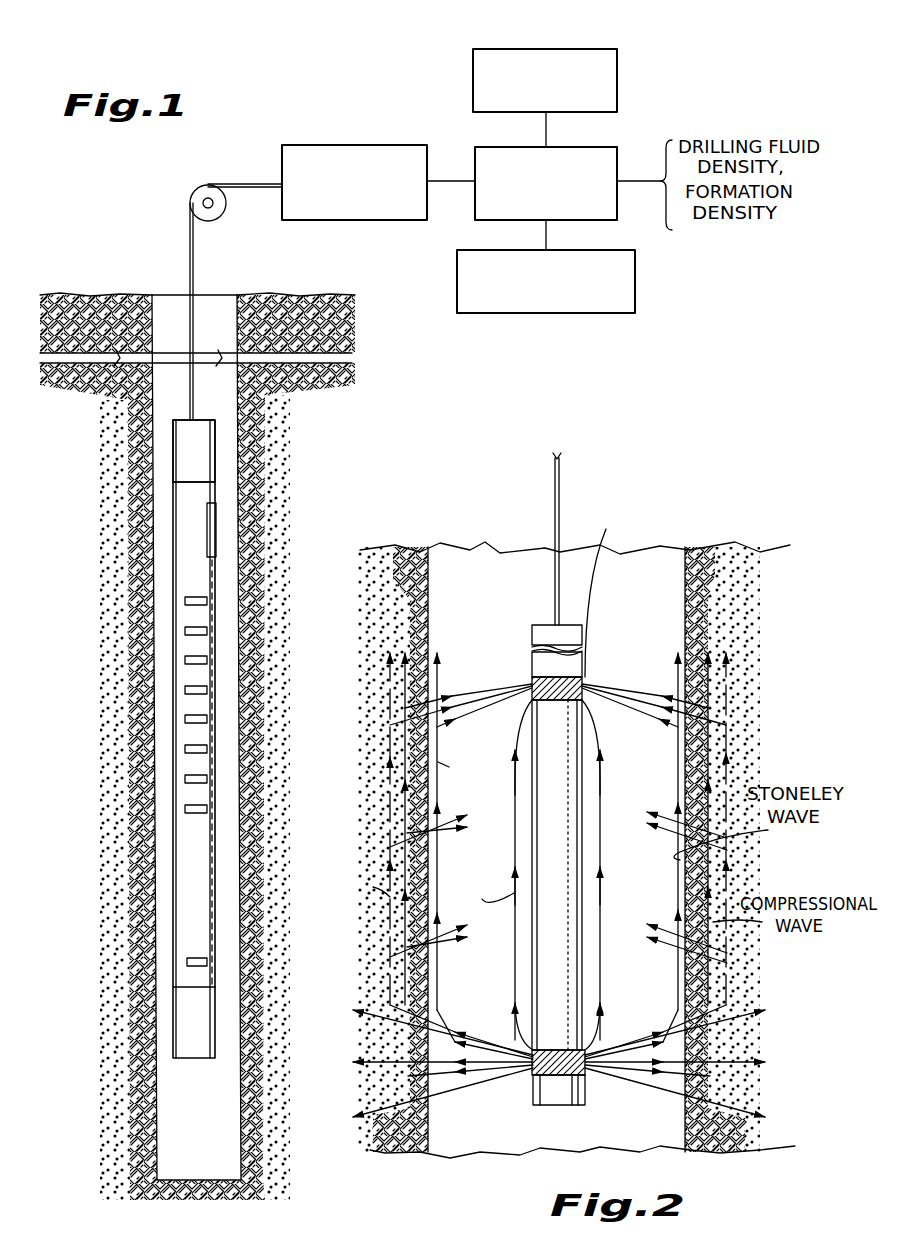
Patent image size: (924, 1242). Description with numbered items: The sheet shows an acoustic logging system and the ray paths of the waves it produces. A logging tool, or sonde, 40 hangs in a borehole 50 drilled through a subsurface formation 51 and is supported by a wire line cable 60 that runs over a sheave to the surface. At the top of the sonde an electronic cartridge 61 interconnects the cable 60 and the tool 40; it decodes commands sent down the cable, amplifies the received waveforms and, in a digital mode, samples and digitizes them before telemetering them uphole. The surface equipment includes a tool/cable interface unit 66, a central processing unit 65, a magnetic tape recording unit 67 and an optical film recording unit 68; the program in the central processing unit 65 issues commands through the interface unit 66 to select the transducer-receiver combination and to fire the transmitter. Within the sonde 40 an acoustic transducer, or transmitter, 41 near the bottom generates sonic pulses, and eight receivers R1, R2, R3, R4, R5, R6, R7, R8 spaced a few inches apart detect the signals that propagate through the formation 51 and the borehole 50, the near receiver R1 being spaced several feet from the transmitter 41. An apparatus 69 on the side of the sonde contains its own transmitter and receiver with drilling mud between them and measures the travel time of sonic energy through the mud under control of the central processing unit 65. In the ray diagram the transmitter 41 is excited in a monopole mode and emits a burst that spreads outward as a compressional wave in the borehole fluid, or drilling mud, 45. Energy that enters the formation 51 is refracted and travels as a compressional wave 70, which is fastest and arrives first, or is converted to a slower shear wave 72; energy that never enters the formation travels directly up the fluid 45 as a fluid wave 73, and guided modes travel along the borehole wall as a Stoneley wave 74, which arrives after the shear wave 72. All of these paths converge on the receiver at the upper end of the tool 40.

In FIG. 1, the logging tool 40 is at (179, 739).
In FIG. 2, the logging tool 40 is at (549, 777).
In FIG. 1, the acoustic transducer 41 is at (187, 964).
In FIG. 2, the acoustic transducer 41 is at (533, 1073).
In FIG. 1, the borehole fluid 45 is at (175, 392).
In FIG. 2, the borehole fluid 45 is at (494, 749).
In FIG. 1, the borehole 50 is at (237, 508).
In FIG. 1, the formation 51 is at (120, 376).
In FIG. 2, the formation 51 is at (407, 582).
In FIG. 1, the wire line cable 60 is at (190, 258).
In FIG. 2, the wire line cable 60 is at (561, 505).
In FIG. 1, the electronic cartridge 61 is at (183, 460).
In FIG. 2, the electronic cartridge 61 is at (540, 633).
In FIG. 1, the central processing unit 65 is at (620, 150).
In FIG. 1, the tool/cable interface unit 66 is at (337, 145).
In FIG. 1, the magnetic tape recording unit 67 is at (618, 50).
In FIG. 1, the optical film recording unit 68 is at (636, 287).
In FIG. 1, the apparatus for measuring travel time 69 is at (218, 546).
In FIG. 2, the compressional wave 70 is at (405, 806).
In FIG. 2, the shear wave 72 is at (388, 768).
In FIG. 2, the fluid wave 73 is at (514, 968).
In FIG. 2, the Stoneley wave 74 is at (676, 749).
In FIG. 1, the receiver R1 is at (185, 809).
In FIG. 1, the receiver R2 is at (185, 779).
In FIG. 1, the receiver R3 is at (185, 749).
In FIG. 1, the receiver R4 is at (185, 719).
In FIG. 1, the receiver R5 is at (185, 690).
In FIG. 1, the receiver R6 is at (185, 660).
In FIG. 1, the receiver R7 is at (185, 631).
In FIG. 1, the receiver R8 is at (185, 601).